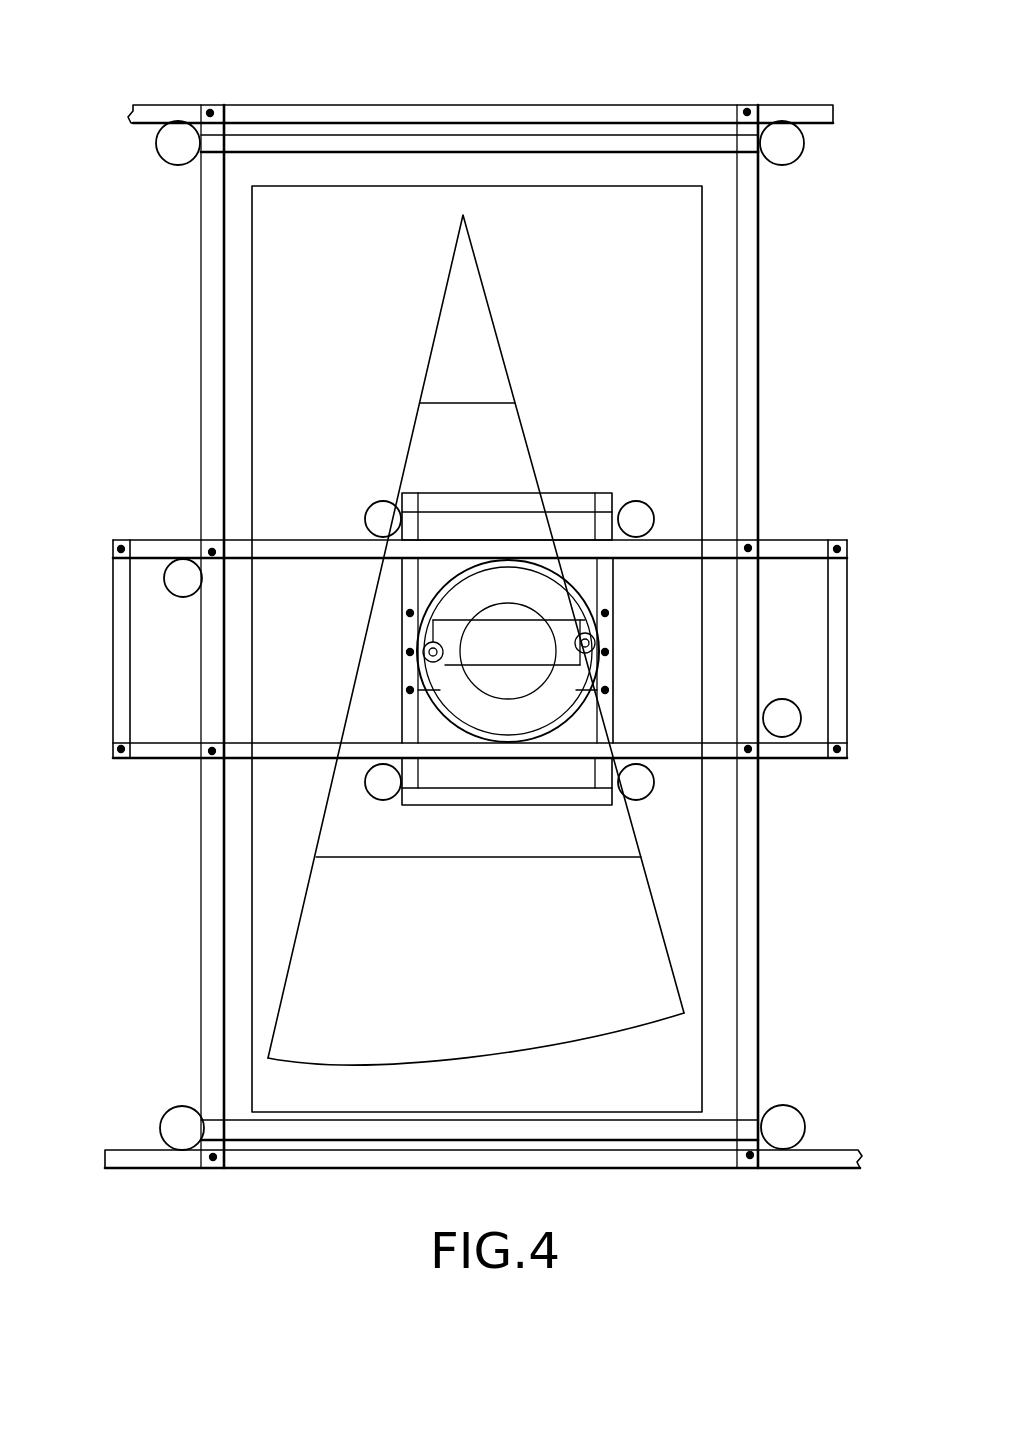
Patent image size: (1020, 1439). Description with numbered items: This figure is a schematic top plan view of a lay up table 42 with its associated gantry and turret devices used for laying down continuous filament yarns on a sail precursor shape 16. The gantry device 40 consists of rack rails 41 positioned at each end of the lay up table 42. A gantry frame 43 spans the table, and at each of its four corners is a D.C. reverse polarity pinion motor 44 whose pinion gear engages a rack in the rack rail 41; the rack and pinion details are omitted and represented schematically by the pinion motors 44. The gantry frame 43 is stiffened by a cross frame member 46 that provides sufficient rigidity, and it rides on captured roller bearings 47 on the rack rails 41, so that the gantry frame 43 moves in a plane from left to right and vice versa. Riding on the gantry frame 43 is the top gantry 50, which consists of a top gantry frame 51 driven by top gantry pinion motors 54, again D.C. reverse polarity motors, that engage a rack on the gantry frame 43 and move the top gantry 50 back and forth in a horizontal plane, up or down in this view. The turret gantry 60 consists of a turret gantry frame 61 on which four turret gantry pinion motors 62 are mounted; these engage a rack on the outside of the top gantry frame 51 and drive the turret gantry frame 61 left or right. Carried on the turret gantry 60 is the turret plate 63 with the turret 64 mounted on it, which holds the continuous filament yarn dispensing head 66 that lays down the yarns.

The wedge-shaped region / radiation field 16 is at (450, 362).
The gantry device 40 is at (770, 342).
The rack rails 41 is at (130, 120).
The lay up table 42 is at (630, 186).
The gantry frame 43 is at (760, 848).
The D.C. reverse polarity pinion motor 44 is at (805, 146).
The cross frame member 46 is at (713, 152).
The captured roller bearings 47 is at (210, 112).
The top gantry 50 is at (805, 535).
The top gantry frame 51 is at (305, 540).
The top gantry pinion motors 54 is at (782, 700).
The turret gantry 60 is at (563, 485).
The turret gantry frame 61 is at (617, 655).
The turret gantry pinion motors 62 is at (383, 501).
The turret plate 63 is at (515, 697).
The turret 64 is at (505, 650).
The continuous filament yarn dispensing head 66 is at (433, 662).